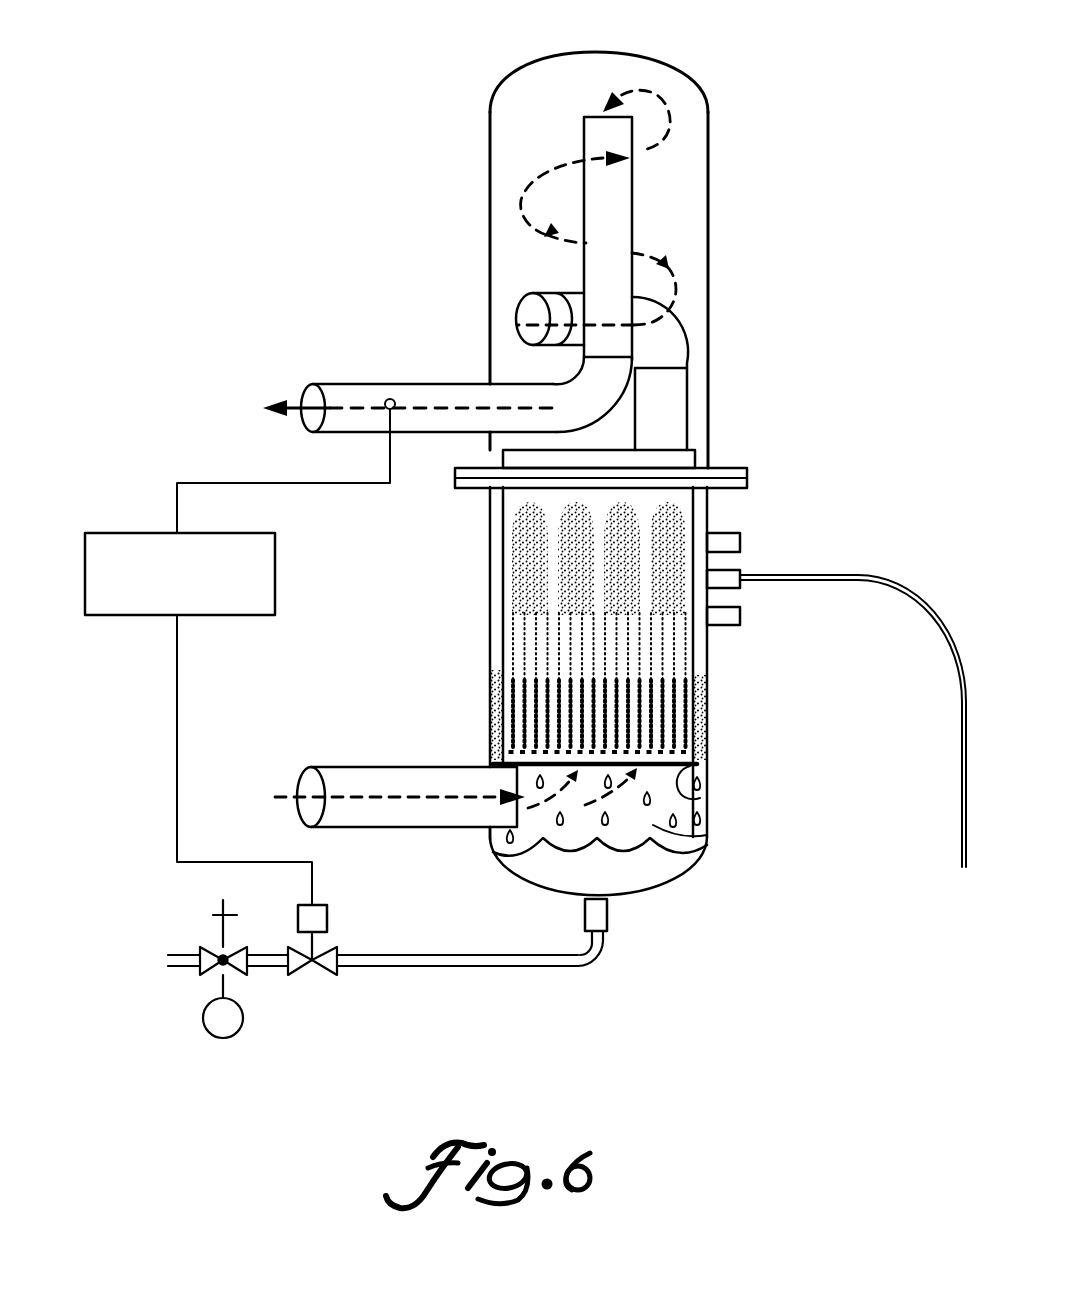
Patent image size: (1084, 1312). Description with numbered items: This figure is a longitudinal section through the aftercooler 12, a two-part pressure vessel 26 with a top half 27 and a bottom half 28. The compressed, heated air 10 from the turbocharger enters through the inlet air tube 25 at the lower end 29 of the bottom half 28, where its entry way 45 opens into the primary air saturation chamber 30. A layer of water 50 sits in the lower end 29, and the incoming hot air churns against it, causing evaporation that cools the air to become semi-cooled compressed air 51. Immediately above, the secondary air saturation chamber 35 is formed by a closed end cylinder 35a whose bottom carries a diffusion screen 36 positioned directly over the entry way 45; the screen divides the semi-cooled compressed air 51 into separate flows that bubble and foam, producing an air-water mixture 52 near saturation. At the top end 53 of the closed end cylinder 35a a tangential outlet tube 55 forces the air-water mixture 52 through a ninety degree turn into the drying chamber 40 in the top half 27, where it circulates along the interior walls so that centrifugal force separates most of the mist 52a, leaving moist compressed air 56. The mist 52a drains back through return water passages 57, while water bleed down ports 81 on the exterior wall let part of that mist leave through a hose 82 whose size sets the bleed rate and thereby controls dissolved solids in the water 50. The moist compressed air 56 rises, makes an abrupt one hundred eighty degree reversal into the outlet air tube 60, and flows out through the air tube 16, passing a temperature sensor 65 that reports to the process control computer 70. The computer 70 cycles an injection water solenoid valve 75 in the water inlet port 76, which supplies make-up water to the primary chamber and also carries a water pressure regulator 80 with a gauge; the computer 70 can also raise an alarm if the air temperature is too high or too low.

The compressed, heated air 10 is at (285, 790).
The aftercooler 12 is at (708, 212).
The air tube 16 is at (447, 384).
The inlet air tube 25 is at (393, 827).
The pressure vessel 26 is at (708, 275).
The top half 27 is at (708, 107).
The bottom half 28 is at (490, 750).
The lower end 29 is at (693, 888).
The primary air saturation chamber 30 is at (707, 820).
The secondary air saturation chamber 35 is at (740, 543).
The closed end cylinder 35a is at (503, 537).
The diffusion screen 36 is at (705, 797).
The drying chamber 40 is at (708, 137).
The entry way 45 is at (493, 764).
The water 50 is at (497, 840).
The semi-cooled compressed air 51 is at (693, 685).
The air-water mixture 52 is at (693, 522).
The mist 52a is at (700, 700).
The top end 53 is at (522, 470).
The tangential outlet tube 55 is at (687, 380).
The moist compressed air 56 is at (605, 110).
The return water passages 57 is at (496, 598).
The outlet air tube 60 is at (584, 125).
The temperature sensor 65 is at (390, 399).
The process control computer 70 is at (275, 545).
The injection water solenoid valve 75 is at (325, 975).
The water inlet port 76 is at (578, 967).
The water pressure regulator 80 is at (228, 910).
The water bleed down ports 81 is at (740, 586).
The hose 82 is at (898, 582).